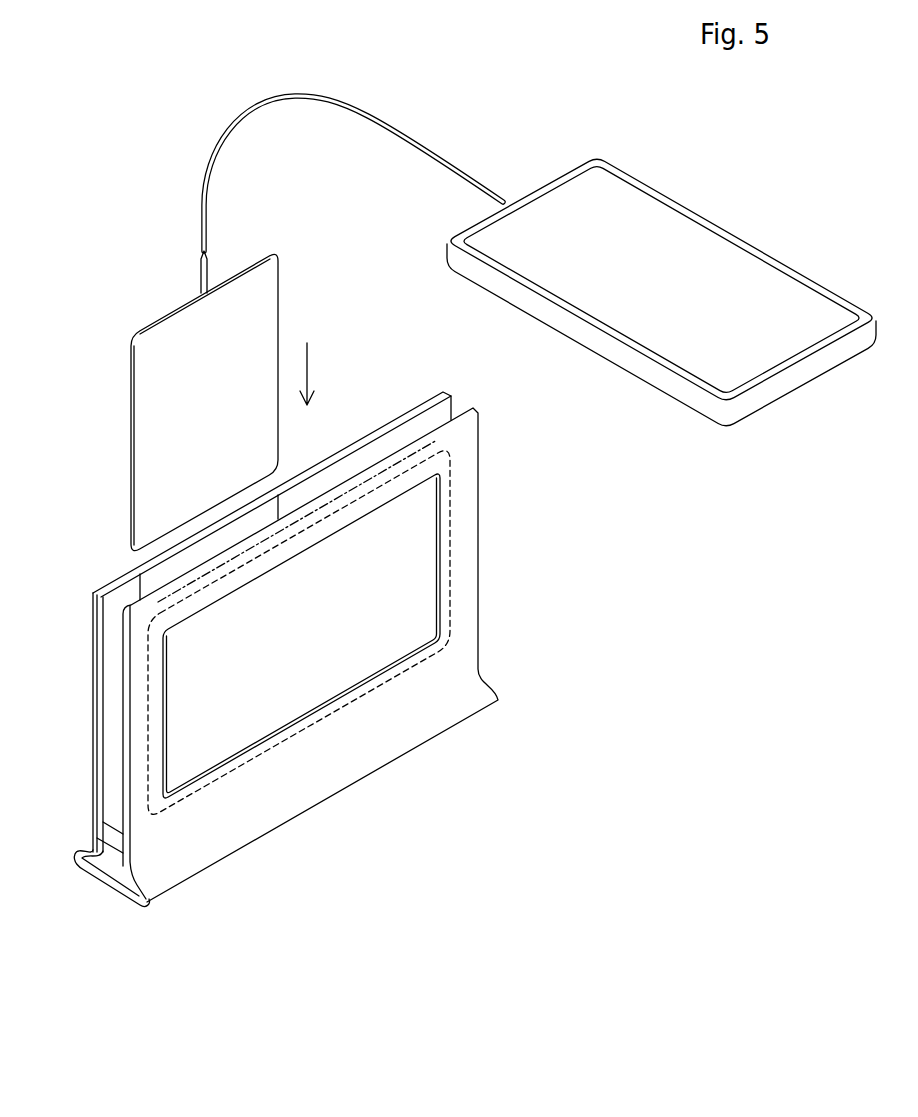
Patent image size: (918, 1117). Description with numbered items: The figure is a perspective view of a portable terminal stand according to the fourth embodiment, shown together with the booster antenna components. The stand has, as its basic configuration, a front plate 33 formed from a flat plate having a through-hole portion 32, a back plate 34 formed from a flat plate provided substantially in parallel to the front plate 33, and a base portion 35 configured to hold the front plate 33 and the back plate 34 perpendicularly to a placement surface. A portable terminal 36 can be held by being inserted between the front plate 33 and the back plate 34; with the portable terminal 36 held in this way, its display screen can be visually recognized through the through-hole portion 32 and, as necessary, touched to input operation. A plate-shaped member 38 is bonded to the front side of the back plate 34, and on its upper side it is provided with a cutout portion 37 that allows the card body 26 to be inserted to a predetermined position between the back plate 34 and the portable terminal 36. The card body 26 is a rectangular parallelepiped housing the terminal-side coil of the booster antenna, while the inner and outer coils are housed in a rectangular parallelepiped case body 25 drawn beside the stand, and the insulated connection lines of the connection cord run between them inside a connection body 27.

The case body 25 is at (672, 198).
The card body 26 is at (270, 280).
The connection body 27 is at (339, 103).
The through-hole portion 32 is at (425, 543).
The front plate 33 is at (468, 462).
The back plate 34 is at (421, 401).
The base portion 35 is at (110, 880).
The portable terminal 36 is at (452, 587).
The cutout portion 37 is at (147, 577).
The plate-shaped member 38 is at (113, 633).